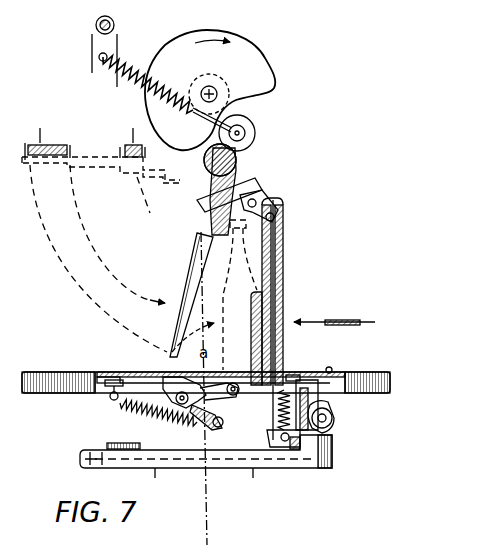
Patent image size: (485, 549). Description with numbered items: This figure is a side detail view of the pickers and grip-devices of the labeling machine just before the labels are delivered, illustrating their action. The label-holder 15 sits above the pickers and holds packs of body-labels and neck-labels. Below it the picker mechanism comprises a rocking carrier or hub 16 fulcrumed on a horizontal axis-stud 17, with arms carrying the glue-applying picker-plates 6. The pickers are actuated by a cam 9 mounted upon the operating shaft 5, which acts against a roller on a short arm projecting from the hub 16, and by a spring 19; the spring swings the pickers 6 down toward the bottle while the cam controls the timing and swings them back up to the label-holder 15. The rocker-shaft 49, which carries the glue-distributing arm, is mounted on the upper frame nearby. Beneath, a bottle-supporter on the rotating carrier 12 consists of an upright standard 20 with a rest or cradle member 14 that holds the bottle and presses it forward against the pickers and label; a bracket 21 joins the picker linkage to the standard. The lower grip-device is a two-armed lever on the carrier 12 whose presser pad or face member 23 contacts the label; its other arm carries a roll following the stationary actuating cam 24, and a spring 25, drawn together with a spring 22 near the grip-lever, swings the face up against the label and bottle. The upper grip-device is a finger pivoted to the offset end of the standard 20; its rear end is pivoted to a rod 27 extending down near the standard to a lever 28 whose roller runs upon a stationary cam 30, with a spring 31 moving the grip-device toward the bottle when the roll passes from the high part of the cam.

The main operating shaft 5 is at (214, 89).
The picker-plate 6 is at (188, 292).
The cam 9 is at (258, 74).
The rotating table or carrier 12 is at (386, 385).
The rest or cradle member 14 is at (258, 305).
The label-holder 15 is at (128, 158).
The rocking carrier or hub 16 is at (254, 148).
The axis-stud 17 is at (240, 165).
The spring 19 is at (133, 66).
The standard 20 is at (280, 265).
The bracket 21 is at (262, 185).
The spring 22 is at (190, 422).
The presser pad or face member 23 is at (150, 372).
The stationary actuating cam 24 is at (106, 445).
The spring 25 is at (108, 400).
The rod 27 is at (272, 253).
The lever 28 is at (334, 421).
The stationary cam 30 is at (325, 452).
The spring 31 is at (330, 369).
The rocker-shaft 49 is at (95, 27).